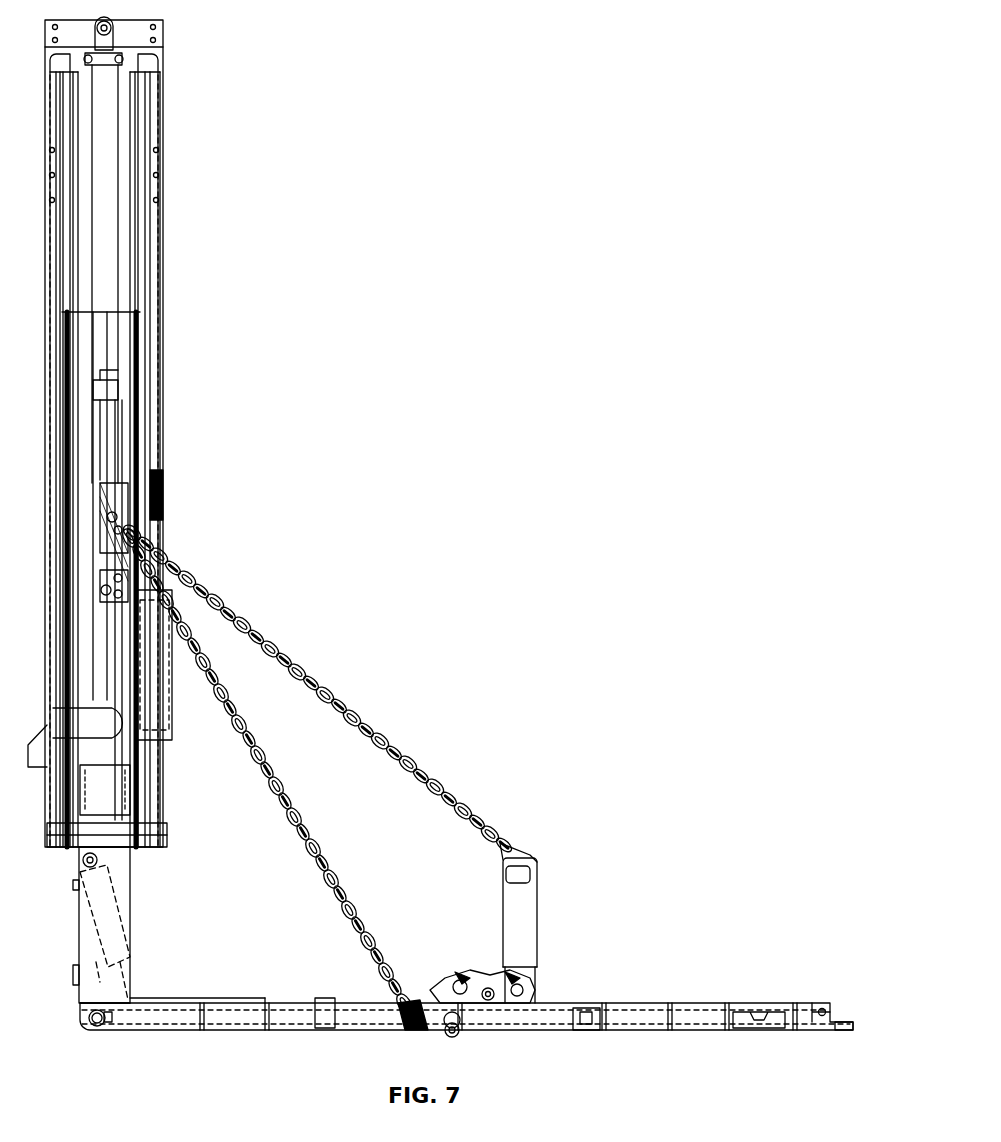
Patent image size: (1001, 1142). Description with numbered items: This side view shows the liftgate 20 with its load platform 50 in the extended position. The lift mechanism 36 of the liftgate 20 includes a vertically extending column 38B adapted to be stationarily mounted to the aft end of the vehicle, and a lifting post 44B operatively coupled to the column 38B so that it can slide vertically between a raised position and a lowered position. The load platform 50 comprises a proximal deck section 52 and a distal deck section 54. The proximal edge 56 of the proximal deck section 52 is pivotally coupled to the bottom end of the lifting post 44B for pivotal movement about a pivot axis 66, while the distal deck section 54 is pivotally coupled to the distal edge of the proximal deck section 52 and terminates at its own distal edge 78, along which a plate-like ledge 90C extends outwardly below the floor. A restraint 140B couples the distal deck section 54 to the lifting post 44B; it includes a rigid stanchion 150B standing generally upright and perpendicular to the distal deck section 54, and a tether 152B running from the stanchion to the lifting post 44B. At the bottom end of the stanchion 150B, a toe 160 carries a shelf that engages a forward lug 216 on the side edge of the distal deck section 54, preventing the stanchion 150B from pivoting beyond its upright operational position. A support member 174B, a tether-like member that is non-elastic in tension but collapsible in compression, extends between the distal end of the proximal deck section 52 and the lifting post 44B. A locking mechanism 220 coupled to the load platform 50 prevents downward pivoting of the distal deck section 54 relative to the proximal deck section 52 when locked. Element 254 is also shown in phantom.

The liftgate 20 is at (448, 522).
The lift mechanism 36 is at (208, 257).
The column 38B is at (165, 182).
The lifting post 44B is at (132, 875).
The load platform 50 is at (600, 1052).
The proximal deck section 52 is at (270, 1035).
The distal deck section 54 is at (745, 1036).
The proximal edge 56 is at (85, 1004).
The pivot axis 66 is at (97, 1027).
The distal edge 78 is at (828, 1000).
The ledge 90C is at (838, 1036).
The restraint 140B is at (482, 770).
The stanchion 150B is at (542, 900).
The tether 152B is at (342, 690).
The toe 160 is at (560, 1035).
The support member 174B is at (300, 810).
The forward lug 216 is at (548, 1030).
The locking mechanism 220 is at (462, 966).
The cylinder (phantom) 254 is at (145, 940).